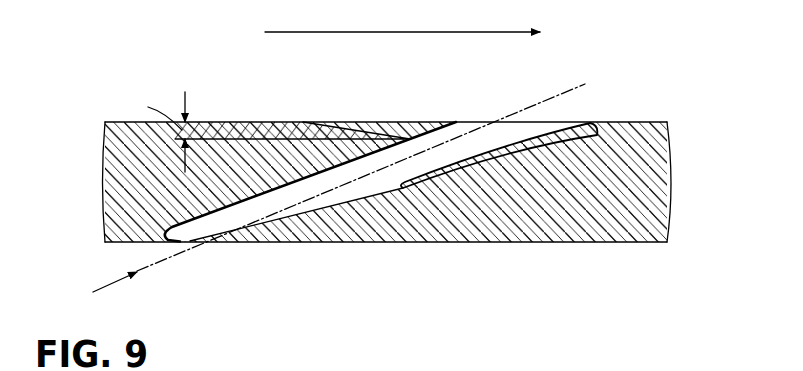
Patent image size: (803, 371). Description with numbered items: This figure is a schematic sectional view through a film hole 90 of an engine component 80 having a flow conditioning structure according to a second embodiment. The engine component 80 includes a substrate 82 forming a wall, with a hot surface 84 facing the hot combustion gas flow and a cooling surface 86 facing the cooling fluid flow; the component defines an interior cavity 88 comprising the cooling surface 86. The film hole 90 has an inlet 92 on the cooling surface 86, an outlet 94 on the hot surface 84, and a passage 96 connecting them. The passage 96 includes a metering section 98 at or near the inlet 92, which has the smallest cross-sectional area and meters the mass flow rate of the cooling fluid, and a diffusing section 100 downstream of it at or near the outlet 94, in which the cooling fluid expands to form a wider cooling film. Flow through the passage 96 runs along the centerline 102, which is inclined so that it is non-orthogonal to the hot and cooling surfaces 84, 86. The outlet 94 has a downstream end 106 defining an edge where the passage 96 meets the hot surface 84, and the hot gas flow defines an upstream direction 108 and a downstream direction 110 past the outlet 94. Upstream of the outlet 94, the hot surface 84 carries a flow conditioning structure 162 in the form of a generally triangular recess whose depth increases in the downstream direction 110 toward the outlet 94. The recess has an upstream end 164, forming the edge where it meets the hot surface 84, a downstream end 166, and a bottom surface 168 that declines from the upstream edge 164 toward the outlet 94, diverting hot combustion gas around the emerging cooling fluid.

The engine component 80 is at (387, 174).
The substrate 82 is at (653, 200).
The hot surface 84 is at (657, 121).
The cooling surface 86 is at (630, 243).
The interior cavity 88 is at (201, 281).
The film hole 90 is at (430, 177).
The inlet 92 is at (236, 243).
The outlet 94 is at (577, 122).
The passage 96 is at (377, 184).
The metering section 98 is at (266, 183).
The diffusing section 100 is at (501, 163).
The centerline 102 is at (233, 243).
The downstream end 106 is at (597, 122).
The upstream direction 108 is at (381, 26).
The downstream direction 110 is at (563, 33).
The flow conditioning structure 162 is at (377, 121).
The upstream end 164 is at (282, 123).
The downstream end 166 is at (427, 122).
The bottom surface 168 is at (268, 128).